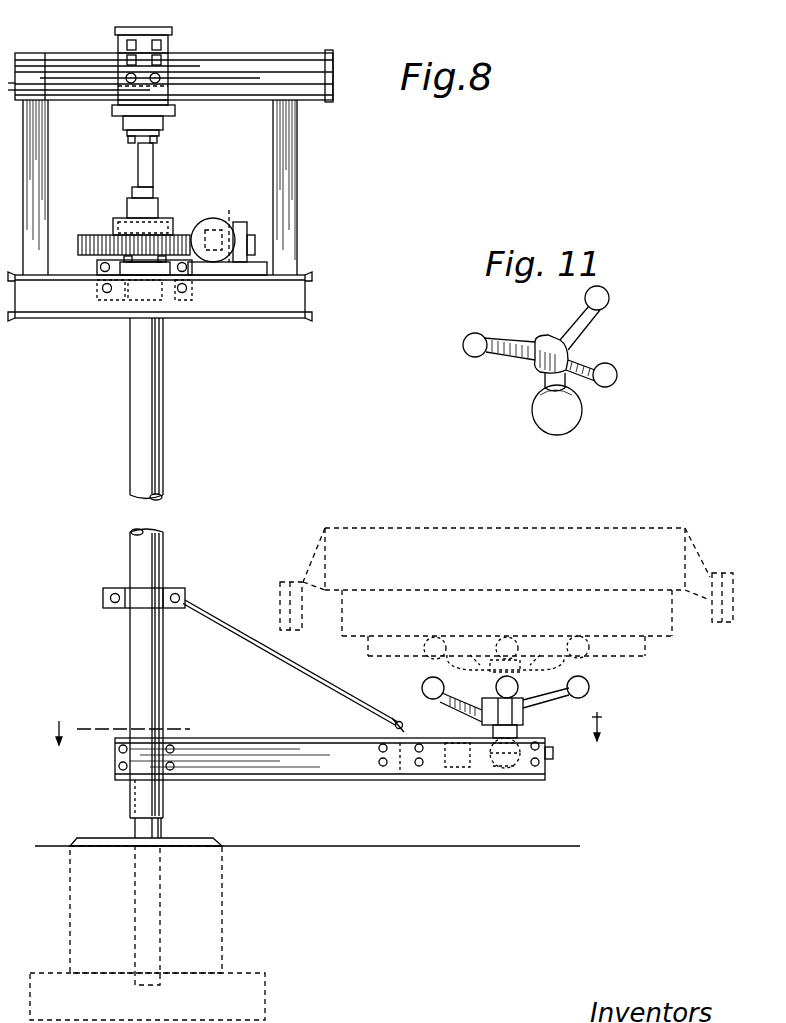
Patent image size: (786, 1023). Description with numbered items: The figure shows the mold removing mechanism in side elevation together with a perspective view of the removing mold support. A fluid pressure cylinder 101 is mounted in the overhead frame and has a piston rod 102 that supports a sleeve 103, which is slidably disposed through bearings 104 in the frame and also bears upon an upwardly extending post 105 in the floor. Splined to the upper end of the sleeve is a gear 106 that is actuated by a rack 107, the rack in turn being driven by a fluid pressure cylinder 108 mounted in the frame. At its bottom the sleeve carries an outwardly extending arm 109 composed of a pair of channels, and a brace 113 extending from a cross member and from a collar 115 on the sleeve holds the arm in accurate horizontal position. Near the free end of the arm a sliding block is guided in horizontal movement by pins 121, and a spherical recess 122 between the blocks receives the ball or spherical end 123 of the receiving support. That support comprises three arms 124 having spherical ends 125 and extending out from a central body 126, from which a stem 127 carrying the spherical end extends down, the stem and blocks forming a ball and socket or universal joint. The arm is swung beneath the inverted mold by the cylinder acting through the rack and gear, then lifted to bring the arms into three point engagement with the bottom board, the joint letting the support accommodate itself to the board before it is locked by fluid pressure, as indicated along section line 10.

In FIG. 8, the section line 10 is at (329, 728).
In FIG. 8, the fluid pressure cylinder 101 is at (172, 44).
In FIG. 8, the piston rod 102 is at (147, 168).
In FIG. 8, the sleeve 103 is at (147, 412).
In FIG. 8, the bearings 104 is at (137, 268).
In FIG. 8, the post 105 is at (160, 820).
In FIG. 8, the gear 106 is at (170, 243).
In FIG. 8, the rack 107 is at (229, 230).
In FIG. 8, the fluid pressure cylinder 108 is at (233, 217).
In FIG. 8, the arm 109 is at (343, 768).
In FIG. 8, the brace 113 is at (233, 626).
In FIG. 8, the collar 115 is at (150, 598).
In FIG. 8, the pins 121 is at (515, 763).
In FIG. 8, the spherical recess 122 is at (493, 769).
In FIG. 11, the ball or spherical end 123 is at (565, 408).
In FIG. 8, the arms 124 is at (555, 705).
In FIG. 11, the arms 124 is at (585, 363).
In FIG. 8, the spherical ends 125 is at (572, 680).
In FIG. 11, the spherical ends 125 is at (588, 300).
In FIG. 8, the central body 126 is at (502, 692).
In FIG. 11, the central body 126 is at (540, 372).
In FIG. 8, the stem 127 is at (492, 729).
In FIG. 11, the stem 127 is at (548, 387).